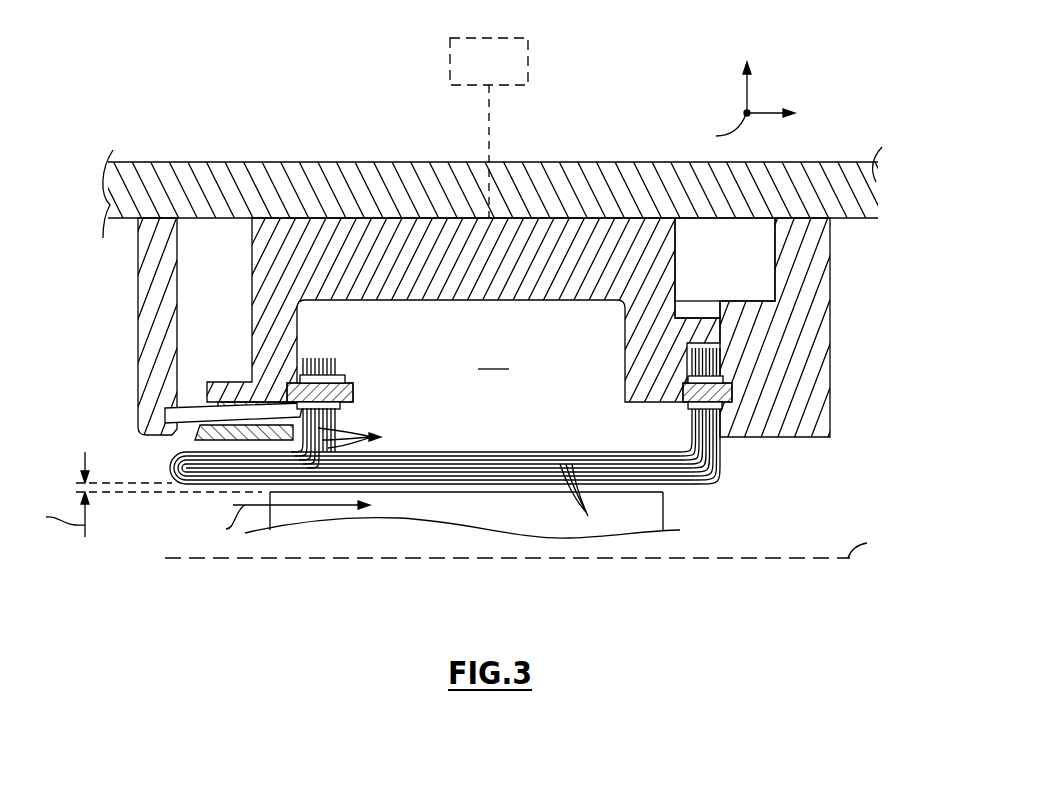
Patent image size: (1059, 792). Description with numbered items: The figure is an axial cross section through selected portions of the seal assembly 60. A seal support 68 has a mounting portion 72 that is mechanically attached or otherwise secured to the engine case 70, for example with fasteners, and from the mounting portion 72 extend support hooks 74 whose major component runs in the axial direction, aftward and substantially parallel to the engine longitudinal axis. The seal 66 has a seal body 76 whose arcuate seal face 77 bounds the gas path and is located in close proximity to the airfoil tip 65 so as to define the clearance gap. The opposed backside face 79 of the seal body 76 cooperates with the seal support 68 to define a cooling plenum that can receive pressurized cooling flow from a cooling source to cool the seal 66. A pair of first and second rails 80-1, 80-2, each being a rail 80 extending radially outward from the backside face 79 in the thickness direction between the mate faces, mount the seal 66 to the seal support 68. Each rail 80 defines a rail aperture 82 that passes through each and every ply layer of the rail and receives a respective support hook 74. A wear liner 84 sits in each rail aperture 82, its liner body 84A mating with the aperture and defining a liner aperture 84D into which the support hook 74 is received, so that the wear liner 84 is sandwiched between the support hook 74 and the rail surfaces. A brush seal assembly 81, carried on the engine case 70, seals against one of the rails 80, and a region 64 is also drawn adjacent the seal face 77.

The seal assembly 60 is at (163, 90).
The seal support 68 is at (438, 206).
The engine case 70 is at (544, 150).
The mounting portion 72 is at (678, 258).
The support hook 74 is at (355, 392).
The seal body 76 is at (468, 463).
The seal face 77 is at (413, 484).
The backside face 79 is at (556, 452).
The rail 80 is at (598, 396).
The first rail 80-1 is at (318, 357).
The second rail 80-2 is at (720, 360).
The brush seal assembly 81 is at (192, 396).
The rail aperture 82 is at (307, 390).
The wear liner 84 is at (553, 439).
The liner body 84A is at (338, 378).
The liner aperture 84D is at (345, 405).
The seal 66 is at (212, 495).
The contact pad 64 is at (665, 514).
The airfoil tip 65 is at (492, 490).